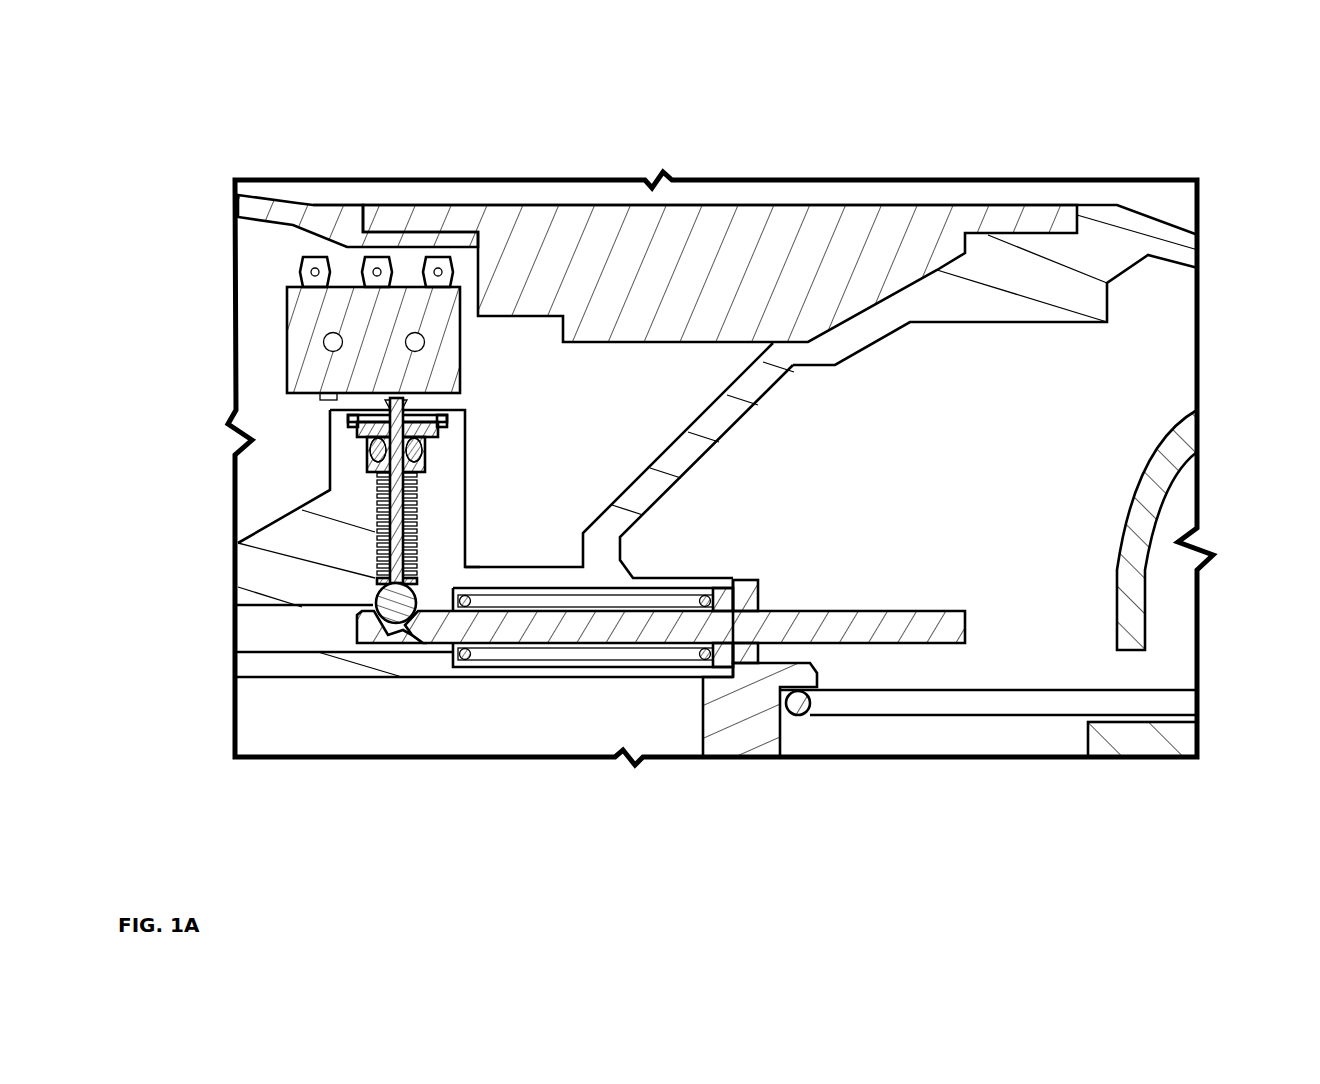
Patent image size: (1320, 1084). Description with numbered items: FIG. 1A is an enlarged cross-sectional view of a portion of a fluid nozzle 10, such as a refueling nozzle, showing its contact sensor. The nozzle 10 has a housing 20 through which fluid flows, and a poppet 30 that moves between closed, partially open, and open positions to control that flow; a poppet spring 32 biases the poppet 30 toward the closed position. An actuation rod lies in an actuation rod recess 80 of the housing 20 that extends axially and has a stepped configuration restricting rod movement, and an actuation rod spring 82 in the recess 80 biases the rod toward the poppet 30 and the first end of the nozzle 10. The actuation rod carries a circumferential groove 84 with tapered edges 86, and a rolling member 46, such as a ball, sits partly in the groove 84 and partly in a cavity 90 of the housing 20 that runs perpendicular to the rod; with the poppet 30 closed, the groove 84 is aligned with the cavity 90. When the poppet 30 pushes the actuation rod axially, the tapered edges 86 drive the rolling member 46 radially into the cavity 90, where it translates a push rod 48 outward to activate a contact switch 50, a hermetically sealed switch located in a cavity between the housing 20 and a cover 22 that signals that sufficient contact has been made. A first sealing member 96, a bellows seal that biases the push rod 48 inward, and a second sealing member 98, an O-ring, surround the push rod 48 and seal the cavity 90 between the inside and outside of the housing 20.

The nozzle 10 is at (888, 128).
The housing 20 is at (1181, 270).
The cover 22 is at (313, 218).
The poppet 30 is at (1183, 458).
The poppet spring 32 is at (978, 700).
The rolling member 46 is at (408, 590).
The push rod 48 is at (380, 587).
The contact switch 50 is at (290, 320).
The actuation rod recess 80 is at (307, 653).
The actuation rod spring 82 is at (627, 655).
The groove 84 is at (402, 645).
The tapered edges 86 is at (373, 618).
The cavity 90 is at (362, 542).
The first sealing member 96 is at (375, 485).
The second sealing member 98 is at (368, 452).